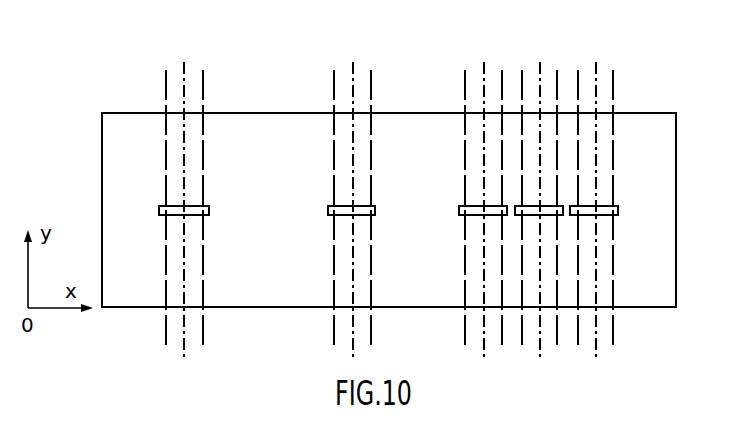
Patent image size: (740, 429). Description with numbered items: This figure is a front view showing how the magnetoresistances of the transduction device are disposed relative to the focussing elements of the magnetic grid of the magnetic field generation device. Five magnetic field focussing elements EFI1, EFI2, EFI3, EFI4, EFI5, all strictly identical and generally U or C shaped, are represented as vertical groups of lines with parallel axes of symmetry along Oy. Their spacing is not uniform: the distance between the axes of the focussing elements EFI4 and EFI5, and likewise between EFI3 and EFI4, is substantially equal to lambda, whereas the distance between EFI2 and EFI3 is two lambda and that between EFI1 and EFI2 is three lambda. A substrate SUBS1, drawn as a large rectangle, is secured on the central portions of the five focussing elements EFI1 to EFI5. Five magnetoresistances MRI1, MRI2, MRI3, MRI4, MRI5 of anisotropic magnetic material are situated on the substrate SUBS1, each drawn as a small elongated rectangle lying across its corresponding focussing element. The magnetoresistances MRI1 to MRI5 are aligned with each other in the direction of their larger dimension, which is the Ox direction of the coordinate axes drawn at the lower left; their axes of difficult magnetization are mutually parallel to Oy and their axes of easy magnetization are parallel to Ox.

The substrate SUBS1 is at (389, 210).
The magnetic field focussing element EFI1 is at (176, 72).
The magnetic field focussing element EFI2 is at (344, 72).
The magnetic field focussing element EFI3 is at (475, 72).
The magnetic field focussing element EFI4 is at (532, 72).
The magnetic field focussing element EFI5 is at (587, 72).
The magnetoresistance MRI1 is at (206, 206).
The magnetoresistance MRI2 is at (331, 206).
The magnetoresistance MRI3 is at (461, 206).
The magnetoresistance MRI4 is at (547, 214).
The magnetoresistance MRI5 is at (617, 206).